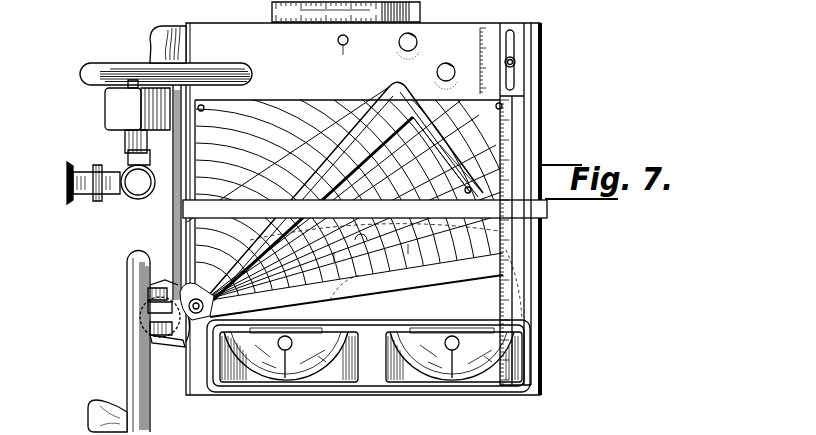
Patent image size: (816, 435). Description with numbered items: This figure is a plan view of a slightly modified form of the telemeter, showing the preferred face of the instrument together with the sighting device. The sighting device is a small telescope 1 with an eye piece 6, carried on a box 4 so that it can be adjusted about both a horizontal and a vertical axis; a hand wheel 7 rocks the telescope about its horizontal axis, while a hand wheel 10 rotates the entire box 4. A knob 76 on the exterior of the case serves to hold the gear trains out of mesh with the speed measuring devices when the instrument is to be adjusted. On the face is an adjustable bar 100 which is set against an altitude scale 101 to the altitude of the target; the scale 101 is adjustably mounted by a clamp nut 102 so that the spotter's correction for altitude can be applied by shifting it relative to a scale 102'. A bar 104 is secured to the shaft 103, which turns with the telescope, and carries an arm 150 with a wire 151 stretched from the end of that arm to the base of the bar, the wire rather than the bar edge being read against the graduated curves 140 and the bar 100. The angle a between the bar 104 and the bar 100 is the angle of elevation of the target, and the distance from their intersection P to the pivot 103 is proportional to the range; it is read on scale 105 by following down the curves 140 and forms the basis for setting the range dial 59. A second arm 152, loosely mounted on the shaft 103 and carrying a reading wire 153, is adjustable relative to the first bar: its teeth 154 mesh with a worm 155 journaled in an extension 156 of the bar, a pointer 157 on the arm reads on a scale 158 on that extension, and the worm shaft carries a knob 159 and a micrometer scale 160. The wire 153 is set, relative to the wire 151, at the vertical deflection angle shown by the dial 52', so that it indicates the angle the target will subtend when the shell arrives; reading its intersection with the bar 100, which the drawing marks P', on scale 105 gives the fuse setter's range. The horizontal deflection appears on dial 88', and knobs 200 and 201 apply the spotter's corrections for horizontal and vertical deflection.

The telescope 1 is at (153, 187).
The box 4 is at (372, 209).
The eye piece 6 is at (101, 177).
The hand wheel 7 is at (98, 70).
The hand wheel 10 is at (127, 268).
The dial 52' is at (368, 371).
The range dial 59 is at (414, 12).
The knob 76 is at (348, 43).
The dial 88' is at (454, 372).
The adjustable bar 100 is at (540, 212).
The altitude scale 101 is at (522, 141).
The clamp nut 102 is at (542, 60).
The scale 102' is at (515, 52).
The shaft 103 is at (198, 332).
The arm 104 is at (358, 165).
The scale 105 is at (452, 266).
The graduated arcs 140 is at (255, 140).
The arm 150 is at (457, 163).
The wire 151 is at (470, 186).
The second arm 152 is at (372, 98).
The reading wire 153 is at (437, 160).
The teeth 154 is at (180, 288).
The worm 155 is at (148, 308).
The extension 156 is at (148, 296).
The pointer 157 is at (150, 328).
The scale 158 is at (148, 318).
The knob 159 is at (175, 355).
The micrometer scale 160 is at (160, 347).
The knob 200 is at (417, 40).
The knob 201 is at (450, 64).
The point of intersection P is at (409, 240).
The point P prime P' is at (334, 249).
The angle a is at (361, 233).